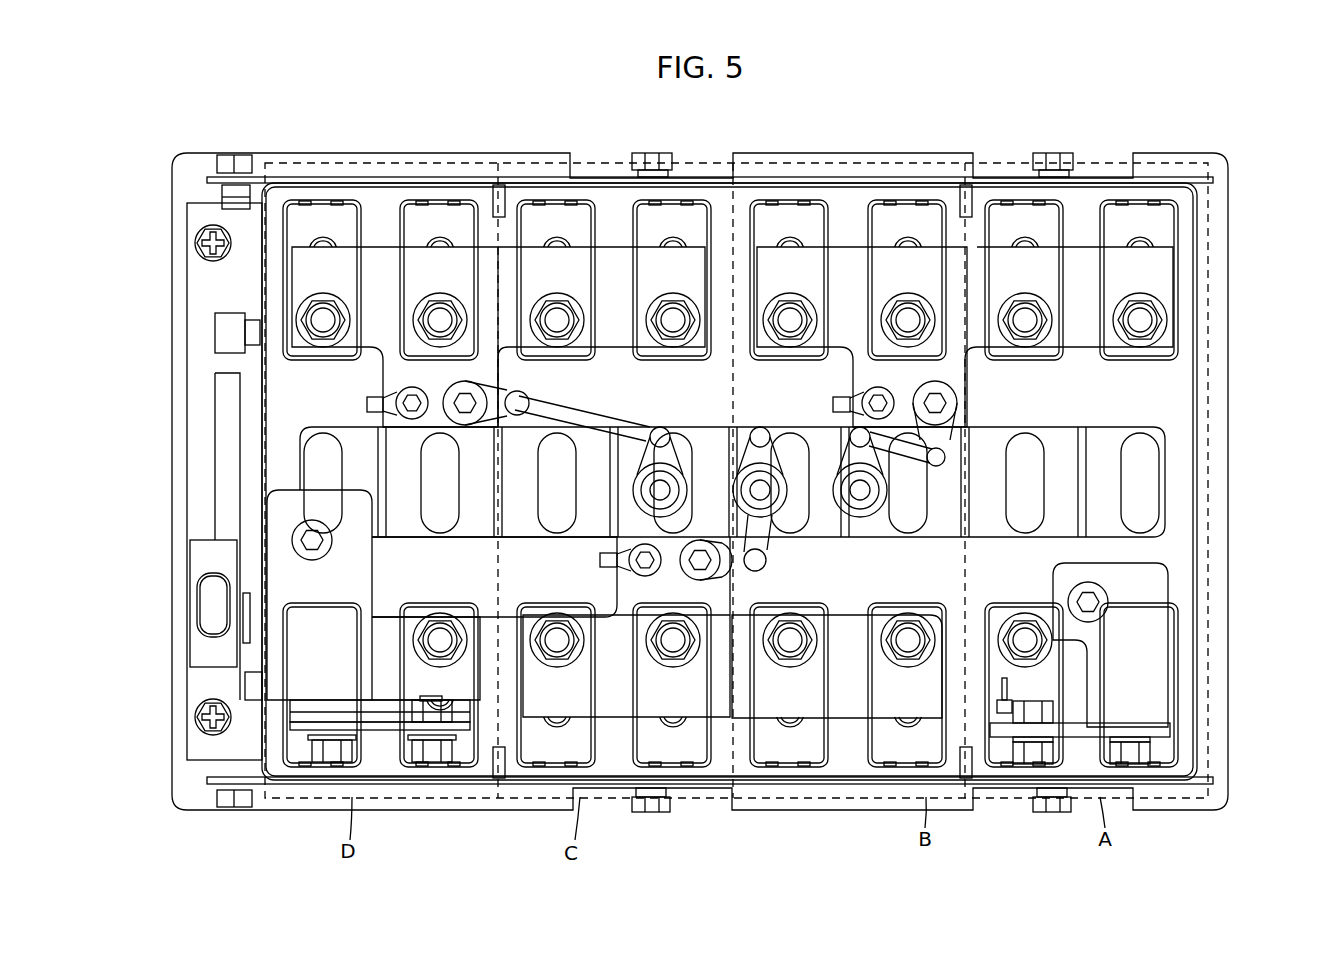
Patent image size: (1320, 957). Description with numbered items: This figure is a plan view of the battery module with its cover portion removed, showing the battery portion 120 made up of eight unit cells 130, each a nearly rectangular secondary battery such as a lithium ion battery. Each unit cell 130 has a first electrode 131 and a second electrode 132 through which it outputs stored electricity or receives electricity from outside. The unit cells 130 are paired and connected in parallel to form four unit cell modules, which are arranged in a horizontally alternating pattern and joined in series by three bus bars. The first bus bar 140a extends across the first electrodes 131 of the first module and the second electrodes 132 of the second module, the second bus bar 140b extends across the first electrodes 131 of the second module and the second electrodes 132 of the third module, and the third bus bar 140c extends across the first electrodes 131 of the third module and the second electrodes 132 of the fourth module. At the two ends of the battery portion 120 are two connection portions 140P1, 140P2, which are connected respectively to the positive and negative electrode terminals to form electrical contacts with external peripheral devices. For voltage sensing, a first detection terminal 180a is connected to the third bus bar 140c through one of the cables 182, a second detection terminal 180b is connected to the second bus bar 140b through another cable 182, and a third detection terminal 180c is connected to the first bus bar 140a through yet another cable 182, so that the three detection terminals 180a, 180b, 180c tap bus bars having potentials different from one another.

The battery portion 120 is at (225, 290).
The unit cell 130 is at (1110, 490).
The first electrode 131 is at (558, 212).
The second electrode 132 is at (329, 212).
The first bus bar 140a is at (980, 272).
The second bus bar 140b is at (838, 697).
The third bus bar 140c is at (607, 282).
The connection portion 140P1 is at (1155, 645).
The connection portion 140P2 is at (277, 568).
The first detection terminal 180a is at (648, 507).
The second detection terminal 180b is at (760, 507).
The third detection terminal 180c is at (858, 507).
The cable 182 is at (595, 414).